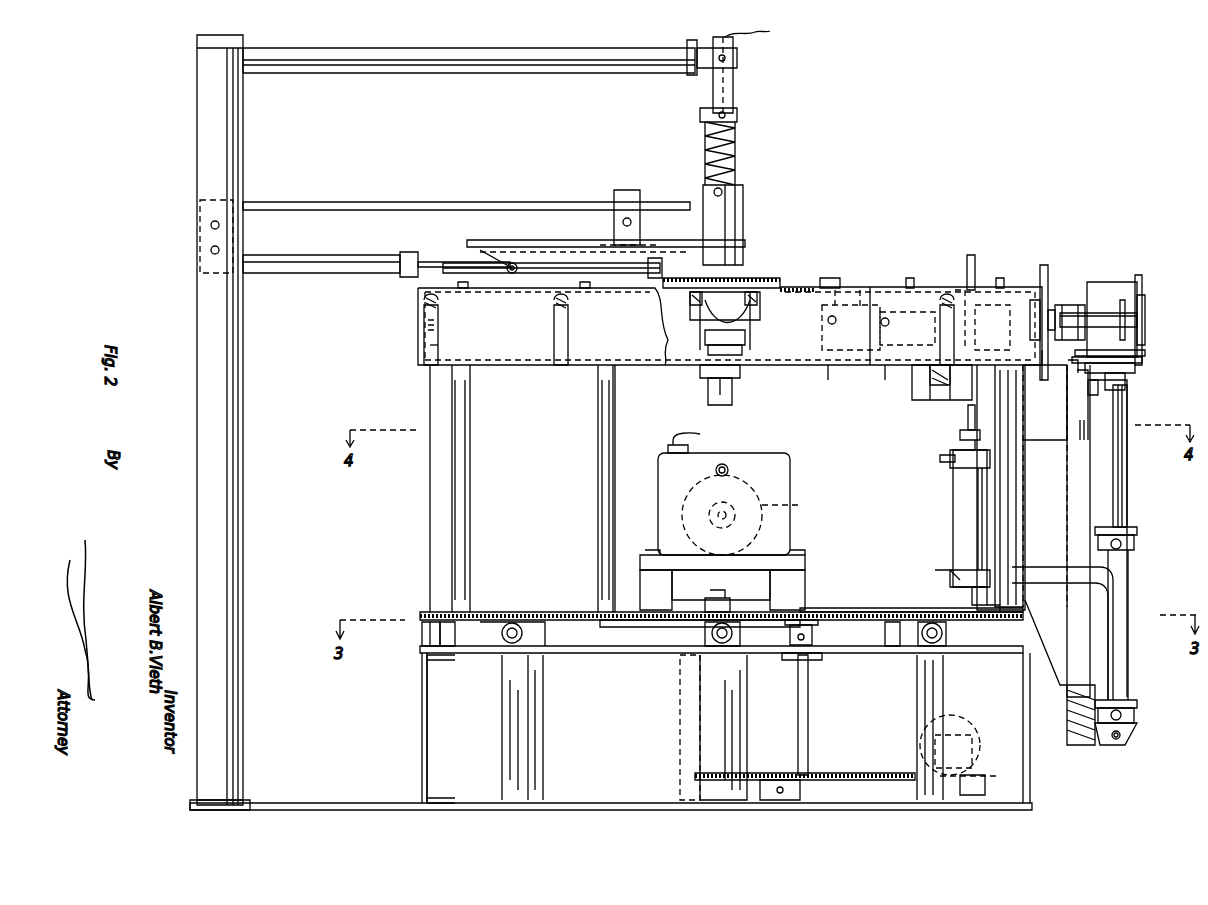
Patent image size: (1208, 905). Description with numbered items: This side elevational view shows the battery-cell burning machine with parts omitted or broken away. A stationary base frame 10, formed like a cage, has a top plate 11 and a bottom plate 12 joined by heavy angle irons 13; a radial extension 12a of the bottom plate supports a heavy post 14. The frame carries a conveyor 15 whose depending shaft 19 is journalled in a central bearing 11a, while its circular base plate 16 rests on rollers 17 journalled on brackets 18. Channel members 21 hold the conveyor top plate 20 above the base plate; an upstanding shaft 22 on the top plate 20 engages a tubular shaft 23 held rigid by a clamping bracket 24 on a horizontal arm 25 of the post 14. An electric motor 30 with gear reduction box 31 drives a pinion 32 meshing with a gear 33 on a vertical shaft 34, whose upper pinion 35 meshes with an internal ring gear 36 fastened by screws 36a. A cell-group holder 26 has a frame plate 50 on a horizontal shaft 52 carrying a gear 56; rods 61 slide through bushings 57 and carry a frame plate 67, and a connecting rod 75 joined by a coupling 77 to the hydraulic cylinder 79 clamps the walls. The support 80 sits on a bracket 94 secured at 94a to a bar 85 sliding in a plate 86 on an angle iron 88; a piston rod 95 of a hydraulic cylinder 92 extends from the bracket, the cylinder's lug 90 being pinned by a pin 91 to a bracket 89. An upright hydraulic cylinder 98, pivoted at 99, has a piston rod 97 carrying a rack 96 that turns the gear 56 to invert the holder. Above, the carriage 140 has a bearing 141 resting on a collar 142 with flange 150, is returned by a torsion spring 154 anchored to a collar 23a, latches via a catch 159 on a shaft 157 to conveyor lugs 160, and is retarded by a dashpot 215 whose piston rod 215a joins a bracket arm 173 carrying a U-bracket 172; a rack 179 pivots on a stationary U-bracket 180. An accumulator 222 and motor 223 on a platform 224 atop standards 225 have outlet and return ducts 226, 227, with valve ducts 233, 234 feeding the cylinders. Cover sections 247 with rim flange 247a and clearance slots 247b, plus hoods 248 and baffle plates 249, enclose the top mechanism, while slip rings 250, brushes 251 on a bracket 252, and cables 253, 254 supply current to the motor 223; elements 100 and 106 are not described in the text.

The base frame 10 is at (410, 716).
The top plate 11 is at (595, 653).
The central bearing 11a is at (690, 685).
The bottom plate 12 is at (585, 803).
The radial extension 12a is at (300, 803).
The angle irons 13 is at (505, 730).
The post 14 is at (245, 575).
The conveyor 15 is at (877, 277).
The base plate 16 is at (490, 612).
The rollers 17 is at (422, 628).
The brackets 18 is at (500, 628).
The depending shaft 19 is at (715, 598).
The top plate 20 is at (680, 365).
The channel members 21 is at (555, 484).
The upstanding shaft 22 is at (710, 375).
The tubular shaft 23 is at (733, 97).
The collar 23a is at (737, 116).
The clamping bracket 24 is at (737, 57).
The horizontal arm 25 is at (482, 73).
The cell-group holder 26 is at (1147, 270).
The electric motor 30 is at (950, 718).
The gear reduction box 31 is at (972, 745).
The pinion 32 is at (973, 778).
The gear 33 is at (845, 773).
The vertical shaft 34 is at (808, 715).
The pinion 35 is at (812, 632).
The internal ring gear 36 is at (830, 612).
The screws 36a is at (630, 630).
The vertical frame plate 50 is at (1068, 305).
The horizontal shaft 52 is at (424, 312).
The gear 56 is at (957, 292).
The bushings 57 is at (1100, 313).
The rods 61 is at (1127, 316).
The vertical frame plate 67 is at (1145, 352).
The connecting rod 75 is at (925, 368).
The coupling 77 is at (890, 318).
The hydraulic cylinder 79 is at (848, 305).
The support 80 is at (1130, 370).
The vertically-extending bar 85 is at (1080, 410).
The plate 86 is at (1082, 482).
The angle iron 88 is at (1025, 445).
The bracket 89 is at (1135, 745).
The lug 90 is at (1137, 735).
The pin 91 is at (1116, 745).
The hydraulic cylinder 92 is at (1128, 575).
The bracket 94 is at (1125, 380).
The securing point 94a is at (1098, 388).
The piston rod 95 is at (1127, 470).
The rack 96 is at (967, 262).
The piston rod 97 is at (968, 430).
The hydraulic cylinder 98 is at (965, 515).
The pivot 99 is at (990, 600).
The plate 100 is at (1135, 360).
The bracket 106 is at (1070, 370).
The carriage 140 is at (559, 230).
The bearing 141 is at (743, 198).
The collar 142 is at (745, 278).
The flange 150 is at (750, 282).
The torsion spring 154 is at (735, 160).
The shaft 157 is at (540, 273).
The catch 159 is at (510, 275).
The lugs 160 is at (458, 285).
The U-bracket 172 is at (630, 190).
The bracket arm 173 is at (650, 245).
The rack 179 is at (495, 202).
The U-bracket 180 is at (200, 232).
The dashpot 215 is at (415, 252).
The piston rod 215a is at (450, 262).
The accumulator 222 is at (800, 528).
The motor 223 is at (800, 505).
The platform 224 is at (800, 565).
The standards 225 is at (790, 578).
The liquid-pressure outlet duct 226 is at (668, 447).
The liquid-return inlet duct 227 is at (726, 468).
The duct 233 is at (1048, 567).
The duct 234 is at (1025, 585).
The cover sections 247 is at (800, 288).
The rim flange 247a is at (440, 348).
The clearance slots 247b is at (955, 374).
The hoods 248 is at (1046, 290).
The baffle plates 249 is at (1050, 368).
The slip rings 250 is at (705, 348).
The brushes 251 is at (705, 335).
The bracket 252 is at (757, 293).
The cable 253 is at (720, 395).
The cable 254 is at (770, 36).